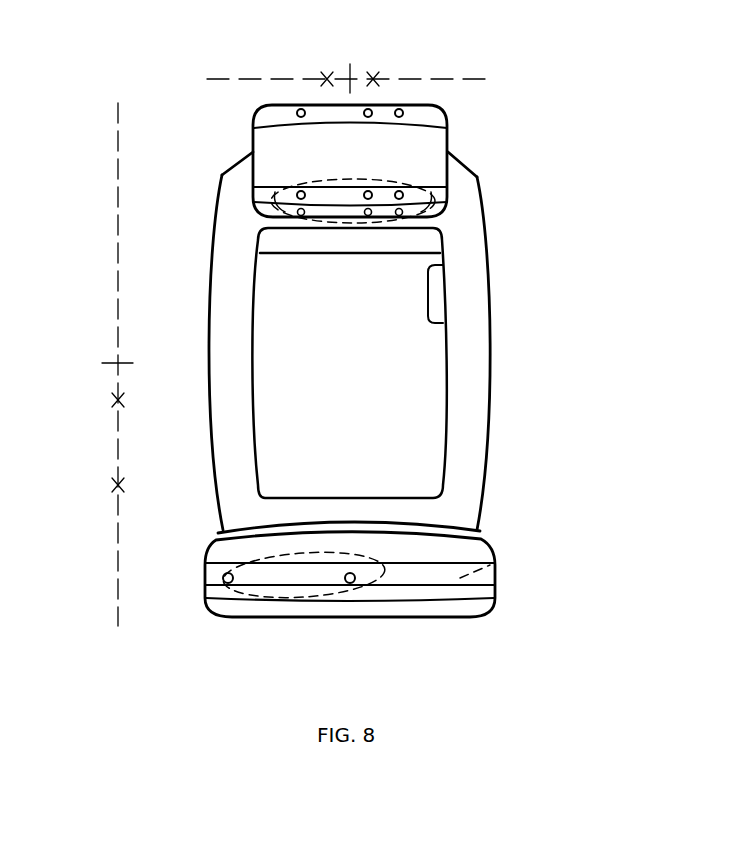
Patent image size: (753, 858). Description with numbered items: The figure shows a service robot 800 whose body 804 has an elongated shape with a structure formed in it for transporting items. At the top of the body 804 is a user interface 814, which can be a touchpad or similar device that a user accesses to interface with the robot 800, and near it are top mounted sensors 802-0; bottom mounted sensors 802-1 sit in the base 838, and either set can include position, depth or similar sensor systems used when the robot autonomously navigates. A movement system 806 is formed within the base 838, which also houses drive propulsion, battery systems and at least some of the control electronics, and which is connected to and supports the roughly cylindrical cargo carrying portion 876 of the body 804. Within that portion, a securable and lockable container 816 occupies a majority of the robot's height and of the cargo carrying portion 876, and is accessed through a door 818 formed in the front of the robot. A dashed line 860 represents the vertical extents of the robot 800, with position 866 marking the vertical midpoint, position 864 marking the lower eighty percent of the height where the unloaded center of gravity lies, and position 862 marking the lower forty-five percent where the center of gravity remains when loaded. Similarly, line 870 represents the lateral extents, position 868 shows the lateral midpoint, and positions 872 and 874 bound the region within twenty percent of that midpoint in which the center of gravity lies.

The service robot 800 is at (353, 361).
The top mounted sensors 802-0 is at (280, 199).
The bottom mounted sensors 802-1 is at (206, 583).
The body 804 is at (487, 218).
The movement system 806 is at (493, 563).
The user interface 814 is at (283, 139).
The container 816 is at (358, 333).
The door 818 is at (350, 437).
The base 838 is at (405, 555).
The line 860 is at (118, 153).
The position 862 is at (93, 403).
The position 864 is at (93, 486).
The position 866 is at (98, 365).
The position 868 is at (350, 64).
The line 870 is at (262, 79).
The position 872 is at (376, 76).
The position 874 is at (325, 76).
The cargo carrying portion 876 is at (397, 315).